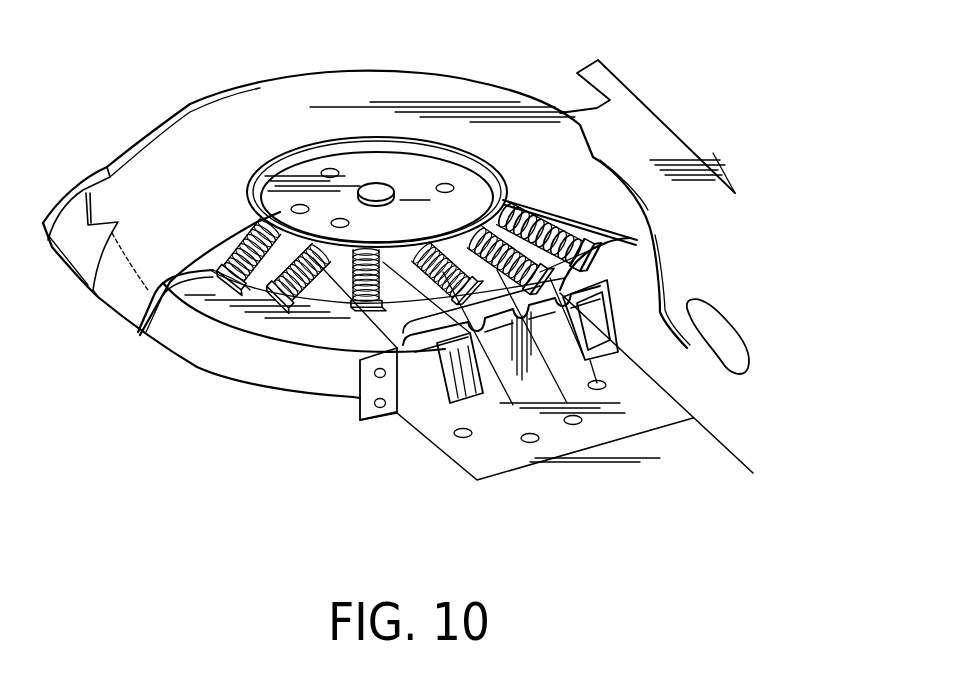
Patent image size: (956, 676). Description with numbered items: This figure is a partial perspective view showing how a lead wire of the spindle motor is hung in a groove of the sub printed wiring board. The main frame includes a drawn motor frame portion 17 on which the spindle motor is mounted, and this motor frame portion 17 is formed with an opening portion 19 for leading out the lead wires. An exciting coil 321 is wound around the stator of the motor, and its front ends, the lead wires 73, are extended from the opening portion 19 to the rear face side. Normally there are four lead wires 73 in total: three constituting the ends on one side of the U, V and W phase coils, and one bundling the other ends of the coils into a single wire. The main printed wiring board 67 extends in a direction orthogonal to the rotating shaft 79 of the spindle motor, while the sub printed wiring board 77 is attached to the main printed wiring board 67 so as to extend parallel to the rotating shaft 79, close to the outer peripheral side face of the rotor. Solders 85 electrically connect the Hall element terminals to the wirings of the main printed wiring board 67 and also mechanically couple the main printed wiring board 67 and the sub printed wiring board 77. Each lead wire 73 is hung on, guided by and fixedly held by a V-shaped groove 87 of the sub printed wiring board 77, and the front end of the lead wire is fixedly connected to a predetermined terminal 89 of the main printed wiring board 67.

The motor frame portion 17 is at (272, 125).
The opening portion 19 is at (548, 236).
The rotating shaft 79 is at (376, 190).
The exciting coil 321 is at (227, 313).
The groove 87 is at (693, 187).
The solders 85 is at (600, 318).
The sub printed wiring board 77 is at (358, 410).
The lead wires 73 is at (457, 422).
The main printed wiring board 67 is at (635, 395).
The terminal 89 is at (606, 383).